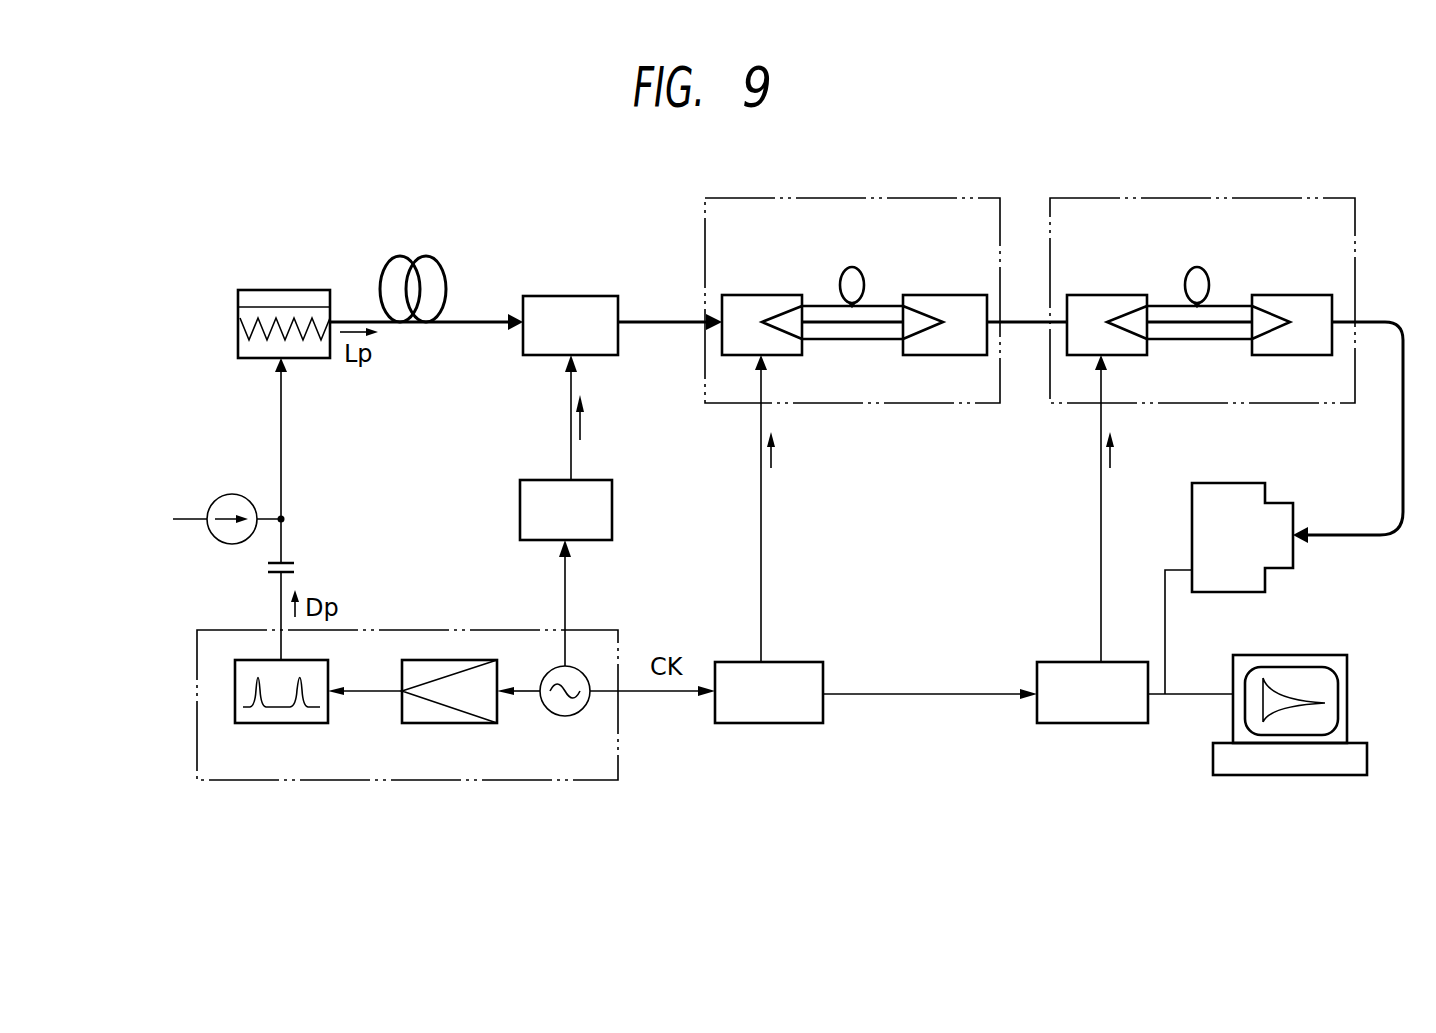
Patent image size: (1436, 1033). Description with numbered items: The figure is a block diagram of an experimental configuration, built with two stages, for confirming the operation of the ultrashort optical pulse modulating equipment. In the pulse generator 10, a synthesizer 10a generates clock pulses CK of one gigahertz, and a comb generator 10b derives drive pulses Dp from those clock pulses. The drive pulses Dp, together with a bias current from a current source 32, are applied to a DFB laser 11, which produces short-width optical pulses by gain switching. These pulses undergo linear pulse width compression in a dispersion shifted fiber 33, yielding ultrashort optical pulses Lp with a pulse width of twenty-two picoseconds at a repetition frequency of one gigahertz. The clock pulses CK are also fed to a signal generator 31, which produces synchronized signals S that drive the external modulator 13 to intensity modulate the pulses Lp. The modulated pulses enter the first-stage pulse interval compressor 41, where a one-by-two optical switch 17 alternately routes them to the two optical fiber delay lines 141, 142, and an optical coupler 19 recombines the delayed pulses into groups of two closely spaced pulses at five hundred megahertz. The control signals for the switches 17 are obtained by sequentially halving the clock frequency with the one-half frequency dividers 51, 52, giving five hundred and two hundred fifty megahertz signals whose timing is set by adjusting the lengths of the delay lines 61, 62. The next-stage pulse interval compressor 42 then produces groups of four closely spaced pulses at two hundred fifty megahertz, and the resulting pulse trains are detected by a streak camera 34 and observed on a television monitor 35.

The pulse generator 10 is at (407, 686).
The synthesizer 10a is at (566, 716).
The comb generator 10b is at (255, 723).
The DFB laser 11 is at (315, 290).
The external modulator 13 is at (601, 296).
The 1x2 optical switch 17 is at (788, 295).
The optical coupler 19 is at (977, 295).
The signal generator 31 is at (612, 492).
The current source 32 is at (246, 497).
The dispersion shifted fiber 33 is at (421, 254).
The streak camera 34 is at (1252, 483).
The television monitor 35 is at (1340, 655).
The first-stage pulse interval compressor 41 is at (982, 198).
The next-stage pulse interval compressor 42 is at (1339, 198).
The 1/2 frequency divider 51 is at (813, 662).
The 1/2 frequency divider 52 is at (1132, 662).
The delay line 61 is at (762, 554).
The delay line 62 is at (1098, 549).
The optical fiber delay line 141 is at (858, 268).
The optical fiber delay line 142 is at (852, 340).